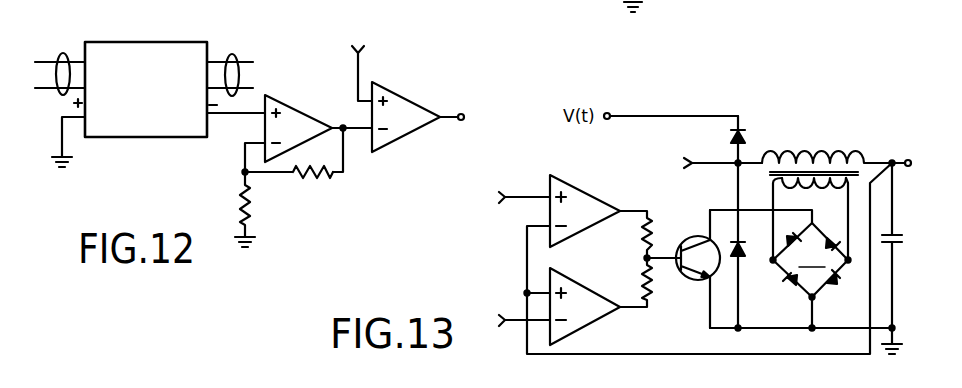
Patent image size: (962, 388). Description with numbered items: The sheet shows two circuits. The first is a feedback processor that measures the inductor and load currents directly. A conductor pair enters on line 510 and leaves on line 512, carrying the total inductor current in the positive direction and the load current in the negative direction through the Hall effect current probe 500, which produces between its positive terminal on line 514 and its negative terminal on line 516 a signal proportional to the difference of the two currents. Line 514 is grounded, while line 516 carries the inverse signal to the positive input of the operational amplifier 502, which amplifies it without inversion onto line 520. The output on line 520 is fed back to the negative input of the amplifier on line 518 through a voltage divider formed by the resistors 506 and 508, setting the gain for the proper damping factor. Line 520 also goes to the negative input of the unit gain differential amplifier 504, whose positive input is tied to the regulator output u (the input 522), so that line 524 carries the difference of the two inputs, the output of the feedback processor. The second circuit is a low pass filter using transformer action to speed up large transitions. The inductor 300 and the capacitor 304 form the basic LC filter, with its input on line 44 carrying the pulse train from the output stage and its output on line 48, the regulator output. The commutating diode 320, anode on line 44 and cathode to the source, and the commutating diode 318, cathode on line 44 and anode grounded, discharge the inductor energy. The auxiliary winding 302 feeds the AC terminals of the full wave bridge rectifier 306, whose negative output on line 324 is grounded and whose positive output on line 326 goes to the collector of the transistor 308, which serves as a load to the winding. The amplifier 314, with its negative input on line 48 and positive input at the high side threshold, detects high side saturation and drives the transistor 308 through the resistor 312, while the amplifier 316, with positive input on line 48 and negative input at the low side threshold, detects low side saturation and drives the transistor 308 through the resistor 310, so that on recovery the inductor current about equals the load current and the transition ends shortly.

In FIG. 12, the Hall effect current probe 500 is at (148, 30).
In FIG. 12, the line 510 is at (63, 52).
In FIG. 12, the line 512 is at (232, 54).
In FIG. 12, the line 514 is at (62, 140).
In FIG. 12, the line 516 is at (253, 110).
In FIG. 12, the operational amplifier 502 is at (318, 120).
In FIG. 12, the line 518 is at (243, 149).
In FIG. 12, the line 520 is at (352, 132).
In FIG. 12, the resistor 506 is at (309, 178).
In FIG. 12, the resistor 508 is at (250, 208).
In FIG. 12, the input u 522 is at (357, 72).
In FIG. 12, the unit gain differential amplifier 504 is at (428, 106).
In FIG. 12, the line 524 is at (455, 114).
In FIG. 13, the line 44 is at (704, 162).
In FIG. 13, the commutating diode 320 is at (746, 138).
In FIG. 13, the inductor 300 is at (812, 152).
In FIG. 13, the auxiliary winding 302 is at (834, 196).
In FIG. 13, the line 48 is at (885, 160).
In FIG. 13, the capacitor 304 is at (898, 245).
In FIG. 13, the line 326 is at (750, 210).
In FIG. 13, the full wave bridge rectifier 306 is at (810, 261).
In FIG. 13, the line 324 is at (814, 312).
In FIG. 13, the commutating diode 318 is at (743, 256).
In FIG. 13, the transistor 308 is at (683, 269).
In FIG. 13, the amplifier 314 is at (596, 190).
In FIG. 13, the amplifier 316 is at (594, 322).
In FIG. 13, the resistor 312 is at (653, 237).
In FIG. 13, the resistor 310 is at (645, 283).